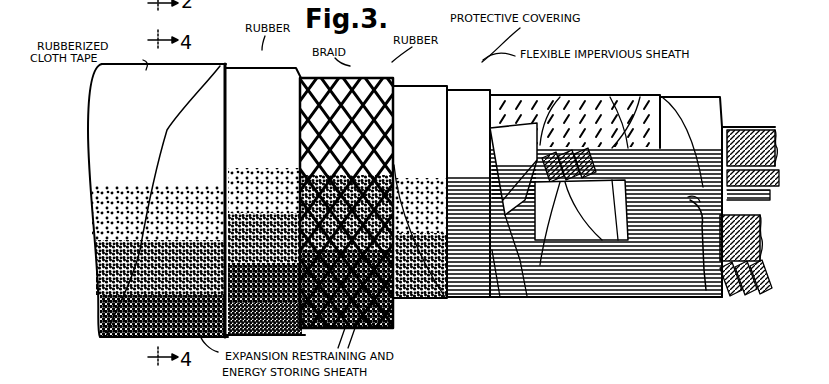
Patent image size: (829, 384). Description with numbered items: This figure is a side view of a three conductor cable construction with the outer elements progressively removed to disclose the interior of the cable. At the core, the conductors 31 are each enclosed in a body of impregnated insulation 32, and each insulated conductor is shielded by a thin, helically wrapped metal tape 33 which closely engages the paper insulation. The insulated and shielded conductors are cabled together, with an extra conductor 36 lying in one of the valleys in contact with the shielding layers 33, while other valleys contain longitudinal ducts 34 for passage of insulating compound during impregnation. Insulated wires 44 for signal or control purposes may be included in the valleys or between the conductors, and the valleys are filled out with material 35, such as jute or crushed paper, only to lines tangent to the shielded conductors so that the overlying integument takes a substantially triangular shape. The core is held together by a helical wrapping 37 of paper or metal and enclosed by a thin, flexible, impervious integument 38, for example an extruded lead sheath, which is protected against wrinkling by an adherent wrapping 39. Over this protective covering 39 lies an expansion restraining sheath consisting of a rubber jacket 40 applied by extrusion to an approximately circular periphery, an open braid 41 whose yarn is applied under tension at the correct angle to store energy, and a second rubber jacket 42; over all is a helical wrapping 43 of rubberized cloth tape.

The conductors 31 is at (745, 125).
The body of impregnated insulation 32 is at (694, 102).
The helically wrapped metal tape 33 is at (600, 98).
The longitudinal ducts 34 is at (636, 98).
The filling material 35 is at (522, 125).
The extra conductor 36 is at (778, 180).
The helical wrapping 37 is at (522, 297).
The flexible impervious integument 38 is at (470, 96).
The adherent wrapping 39 is at (425, 92).
The rubber jacket 40 is at (378, 84).
The open braid 41 is at (343, 80).
The second rubber jacket 42 is at (266, 77).
The helical wrapping of rubberized cloth tape 43 is at (198, 70).
The insulated wires 44 is at (703, 286).